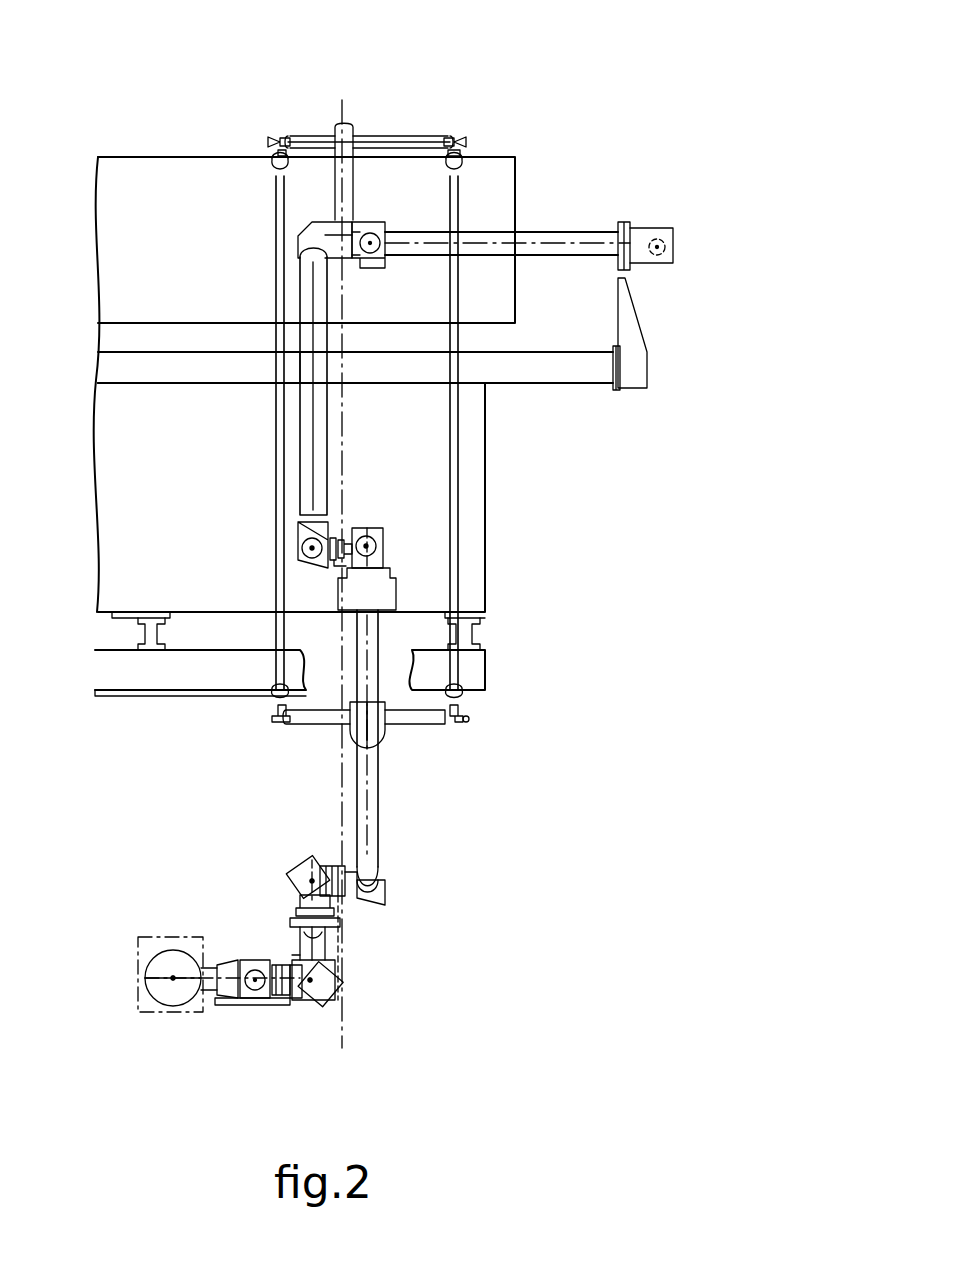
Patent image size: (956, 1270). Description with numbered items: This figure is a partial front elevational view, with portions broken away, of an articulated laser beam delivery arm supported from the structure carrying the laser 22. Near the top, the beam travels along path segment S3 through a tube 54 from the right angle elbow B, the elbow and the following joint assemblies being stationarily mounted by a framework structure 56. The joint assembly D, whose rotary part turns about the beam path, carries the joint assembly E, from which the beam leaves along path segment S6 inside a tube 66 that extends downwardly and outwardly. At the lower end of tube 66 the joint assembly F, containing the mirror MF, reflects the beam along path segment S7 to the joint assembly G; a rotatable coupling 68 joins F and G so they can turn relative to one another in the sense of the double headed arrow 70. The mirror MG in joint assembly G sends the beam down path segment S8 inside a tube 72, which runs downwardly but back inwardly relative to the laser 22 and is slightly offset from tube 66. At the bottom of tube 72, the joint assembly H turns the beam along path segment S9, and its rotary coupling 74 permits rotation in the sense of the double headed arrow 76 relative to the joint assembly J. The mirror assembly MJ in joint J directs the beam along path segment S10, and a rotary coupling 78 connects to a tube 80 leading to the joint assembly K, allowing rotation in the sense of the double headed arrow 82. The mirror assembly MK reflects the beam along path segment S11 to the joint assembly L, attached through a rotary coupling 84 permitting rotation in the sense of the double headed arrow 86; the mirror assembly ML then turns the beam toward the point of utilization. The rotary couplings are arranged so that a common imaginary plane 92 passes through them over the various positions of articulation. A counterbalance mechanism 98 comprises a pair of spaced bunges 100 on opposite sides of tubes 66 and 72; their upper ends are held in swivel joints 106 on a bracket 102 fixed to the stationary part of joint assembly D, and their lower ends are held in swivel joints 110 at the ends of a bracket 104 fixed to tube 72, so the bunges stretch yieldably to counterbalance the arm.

The laser 22 is at (177, 157).
The tube 54 is at (536, 232).
The framework structure 56 is at (540, 383).
The tube 66 is at (300, 288).
The rotatable coupling 68 is at (340, 540).
The double headed arrow 70 is at (336, 564).
The tube 72 is at (380, 836).
The rotary coupling 74 is at (337, 858).
The double headed arrow 76 is at (340, 912).
The rotary coupling 78 is at (345, 920).
The tube 80 is at (336, 975).
The double headed arrow 82 is at (328, 948).
The rotary coupling 84 is at (290, 970).
The double headed arrow 86 is at (274, 972).
The common imaginary plane 92 is at (350, 98).
The counterbalance mechanism 98 is at (462, 134).
The bunges 100 is at (275, 414).
The bracket 102 is at (318, 136).
The bracket 104 is at (308, 720).
The swivel joints 106 is at (276, 150).
The swivel joints 110 is at (276, 720).
The right angle elbow B is at (674, 230).
The joint assembly D is at (382, 232).
The joint assembly E is at (310, 232).
The joint assembly F is at (300, 528).
The joint assembly G is at (378, 534).
The joint assembly H is at (375, 896).
The joint assembly J is at (292, 880).
The joint assembly K is at (305, 1002).
The joint assembly L is at (240, 1005).
The mirror MF is at (308, 549).
The mirror MG is at (372, 548).
The mirror assembly MJ is at (304, 870).
The mirror assembly MK is at (318, 1002).
The mirror assembly ML is at (250, 1005).
The path segment S3 is at (590, 240).
The path segment S6 is at (310, 385).
The path segment S7 is at (368, 528).
The path segment S8 is at (370, 775).
The path segment S9 is at (318, 860).
The path segment S10 is at (292, 955).
The path segment S11 is at (262, 1005).